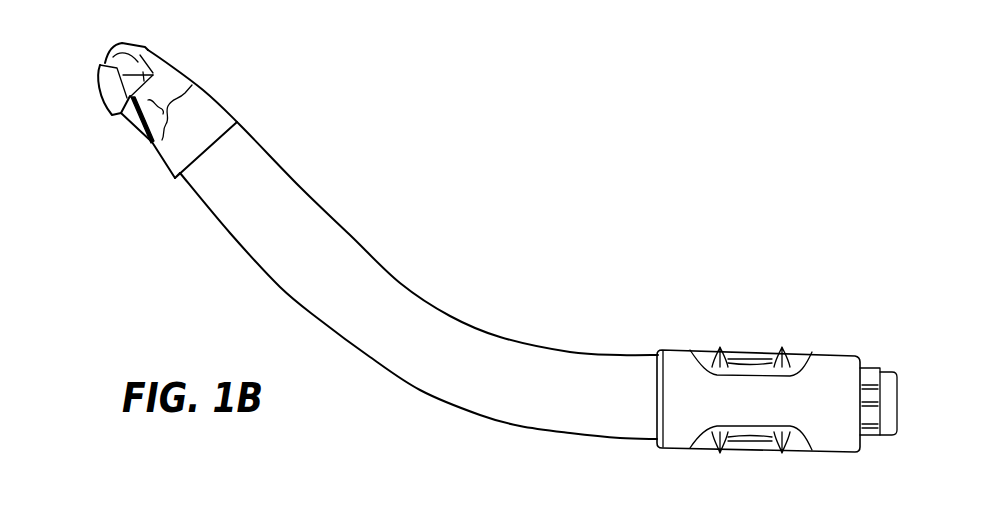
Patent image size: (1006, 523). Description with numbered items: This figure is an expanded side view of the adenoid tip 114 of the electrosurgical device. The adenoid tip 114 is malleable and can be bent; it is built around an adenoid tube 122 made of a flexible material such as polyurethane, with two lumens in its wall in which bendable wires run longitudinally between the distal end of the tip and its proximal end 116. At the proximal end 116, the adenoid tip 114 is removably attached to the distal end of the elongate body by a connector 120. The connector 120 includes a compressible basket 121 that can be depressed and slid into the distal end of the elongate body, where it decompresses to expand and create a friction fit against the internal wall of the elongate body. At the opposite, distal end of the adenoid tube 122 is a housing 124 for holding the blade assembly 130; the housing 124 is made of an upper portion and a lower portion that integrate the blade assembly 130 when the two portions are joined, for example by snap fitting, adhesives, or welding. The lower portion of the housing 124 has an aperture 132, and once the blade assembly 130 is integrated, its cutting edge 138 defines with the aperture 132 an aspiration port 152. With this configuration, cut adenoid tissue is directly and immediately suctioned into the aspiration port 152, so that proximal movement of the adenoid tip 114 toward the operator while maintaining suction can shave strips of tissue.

The adenoid tip 114 is at (578, 139).
The proximal end 116 is at (806, 334).
The connector 120 is at (777, 457).
The compressible basket 121 is at (892, 399).
The adenoid tube 122 is at (401, 288).
The housing 124 is at (220, 118).
The blade assembly 130 is at (118, 43).
The aperture 132 is at (192, 85).
The cutting edge 138 is at (121, 122).
The aspiration port 152 is at (135, 130).